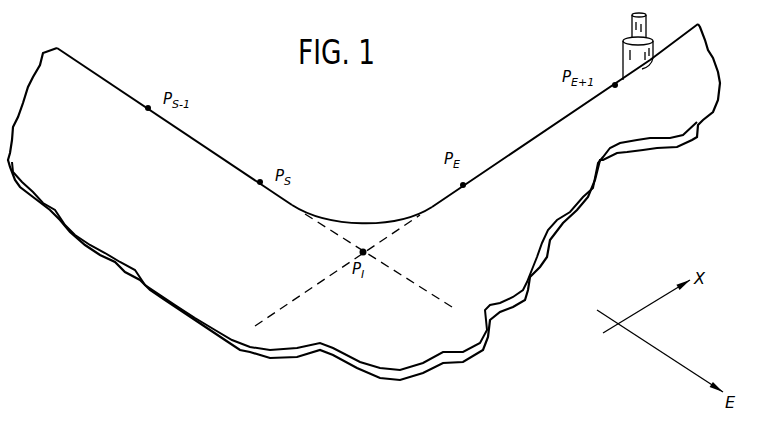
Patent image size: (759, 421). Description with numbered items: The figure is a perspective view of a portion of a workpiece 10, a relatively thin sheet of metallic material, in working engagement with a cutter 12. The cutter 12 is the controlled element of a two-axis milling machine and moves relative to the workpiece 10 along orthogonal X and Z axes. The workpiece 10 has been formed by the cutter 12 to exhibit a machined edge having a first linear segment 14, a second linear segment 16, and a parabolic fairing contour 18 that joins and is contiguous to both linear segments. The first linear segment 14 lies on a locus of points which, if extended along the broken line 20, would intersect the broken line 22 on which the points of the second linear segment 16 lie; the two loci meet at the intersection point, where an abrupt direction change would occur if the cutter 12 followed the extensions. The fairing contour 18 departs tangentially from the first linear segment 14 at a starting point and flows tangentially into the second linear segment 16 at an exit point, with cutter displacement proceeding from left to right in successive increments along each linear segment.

The workpiece 10 is at (130, 296).
The cutter 12 is at (622, 50).
The first linear segment 14 is at (106, 80).
The second linear segment 16 is at (535, 138).
The parabolic fairing contour 18 is at (358, 222).
The broken line 20 is at (405, 278).
The broken line 22 is at (315, 282).